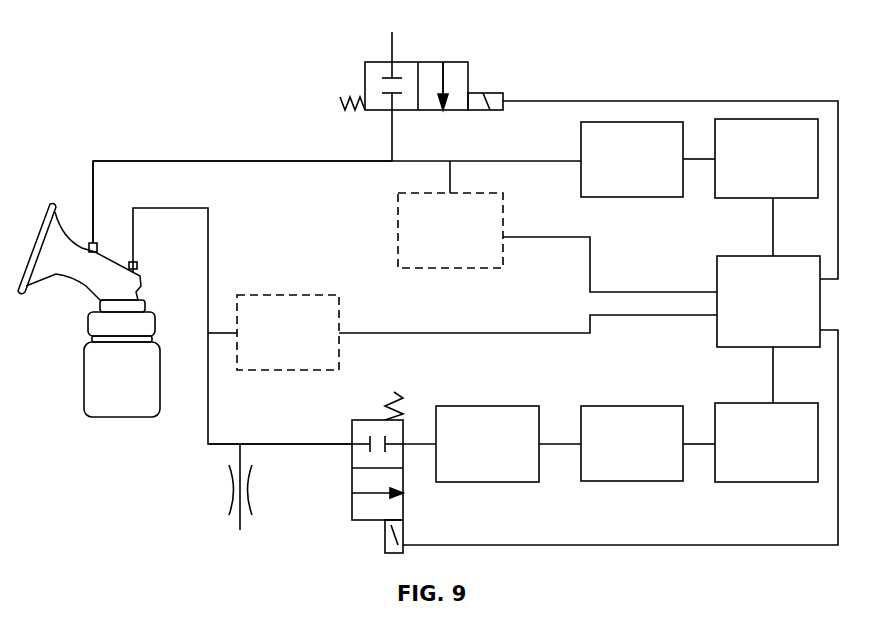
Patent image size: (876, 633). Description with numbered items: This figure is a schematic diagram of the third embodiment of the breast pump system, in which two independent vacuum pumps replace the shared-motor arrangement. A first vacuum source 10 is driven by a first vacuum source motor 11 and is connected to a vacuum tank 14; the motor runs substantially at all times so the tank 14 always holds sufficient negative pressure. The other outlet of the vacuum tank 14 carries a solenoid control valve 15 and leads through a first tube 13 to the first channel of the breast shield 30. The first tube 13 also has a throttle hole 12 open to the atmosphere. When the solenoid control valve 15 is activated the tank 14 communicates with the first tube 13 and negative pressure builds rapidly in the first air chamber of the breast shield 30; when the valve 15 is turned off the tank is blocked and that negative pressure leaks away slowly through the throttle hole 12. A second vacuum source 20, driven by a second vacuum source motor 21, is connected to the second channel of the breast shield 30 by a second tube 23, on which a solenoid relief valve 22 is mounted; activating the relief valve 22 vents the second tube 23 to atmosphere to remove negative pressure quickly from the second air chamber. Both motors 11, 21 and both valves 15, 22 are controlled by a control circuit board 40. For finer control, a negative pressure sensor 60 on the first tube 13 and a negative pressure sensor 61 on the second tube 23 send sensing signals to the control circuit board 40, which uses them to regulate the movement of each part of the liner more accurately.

The first vacuum source 10 is at (583, 432).
The first vacuum source motor 11 is at (737, 470).
The throttle hole 12 is at (253, 483).
The first tube 13 is at (262, 437).
The vacuum tank 14 is at (503, 468).
The solenoid control valve 15 is at (405, 507).
The second vacuum source 20 is at (598, 183).
The second vacuum source motor 21 is at (722, 188).
The solenoid relief valve 22 is at (447, 55).
The second tube 23 is at (238, 163).
The breast shield 30 is at (78, 298).
The control circuit board 40 is at (733, 329).
The negative pressure sensor 60 is at (340, 323).
The negative pressure sensor 61 is at (461, 258).